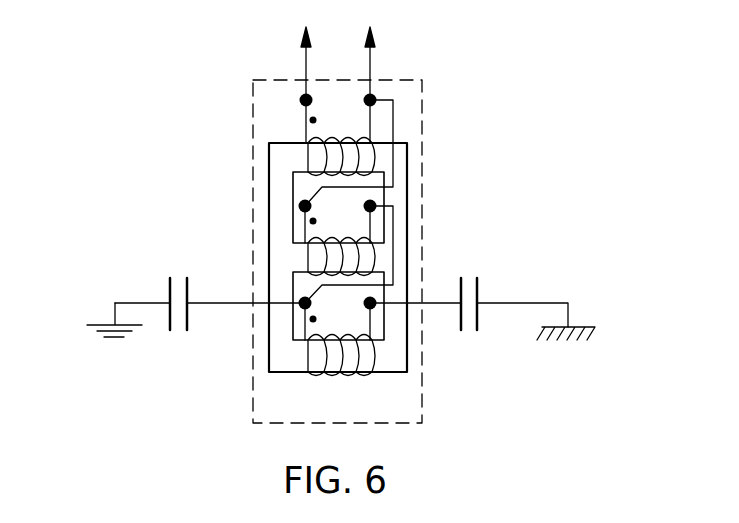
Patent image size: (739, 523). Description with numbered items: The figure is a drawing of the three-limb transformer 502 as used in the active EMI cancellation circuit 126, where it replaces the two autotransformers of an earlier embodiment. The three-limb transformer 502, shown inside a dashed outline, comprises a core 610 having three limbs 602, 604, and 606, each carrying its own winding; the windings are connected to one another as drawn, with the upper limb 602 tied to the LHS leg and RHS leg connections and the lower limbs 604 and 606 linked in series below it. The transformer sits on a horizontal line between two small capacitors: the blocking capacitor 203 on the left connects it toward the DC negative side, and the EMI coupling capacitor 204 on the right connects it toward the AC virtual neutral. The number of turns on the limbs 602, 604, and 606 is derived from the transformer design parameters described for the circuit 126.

The active EMI cancellation circuit 126 is at (131, 22).
The blocking capacitor 203 is at (169, 295).
The EMI coupling capacitor 204 is at (479, 300).
The 3-limb transformer 502 is at (422, 121).
The limb 602 is at (298, 157).
The limb 604 is at (288, 256).
The limb 606 is at (296, 357).
The core 610 is at (407, 165).